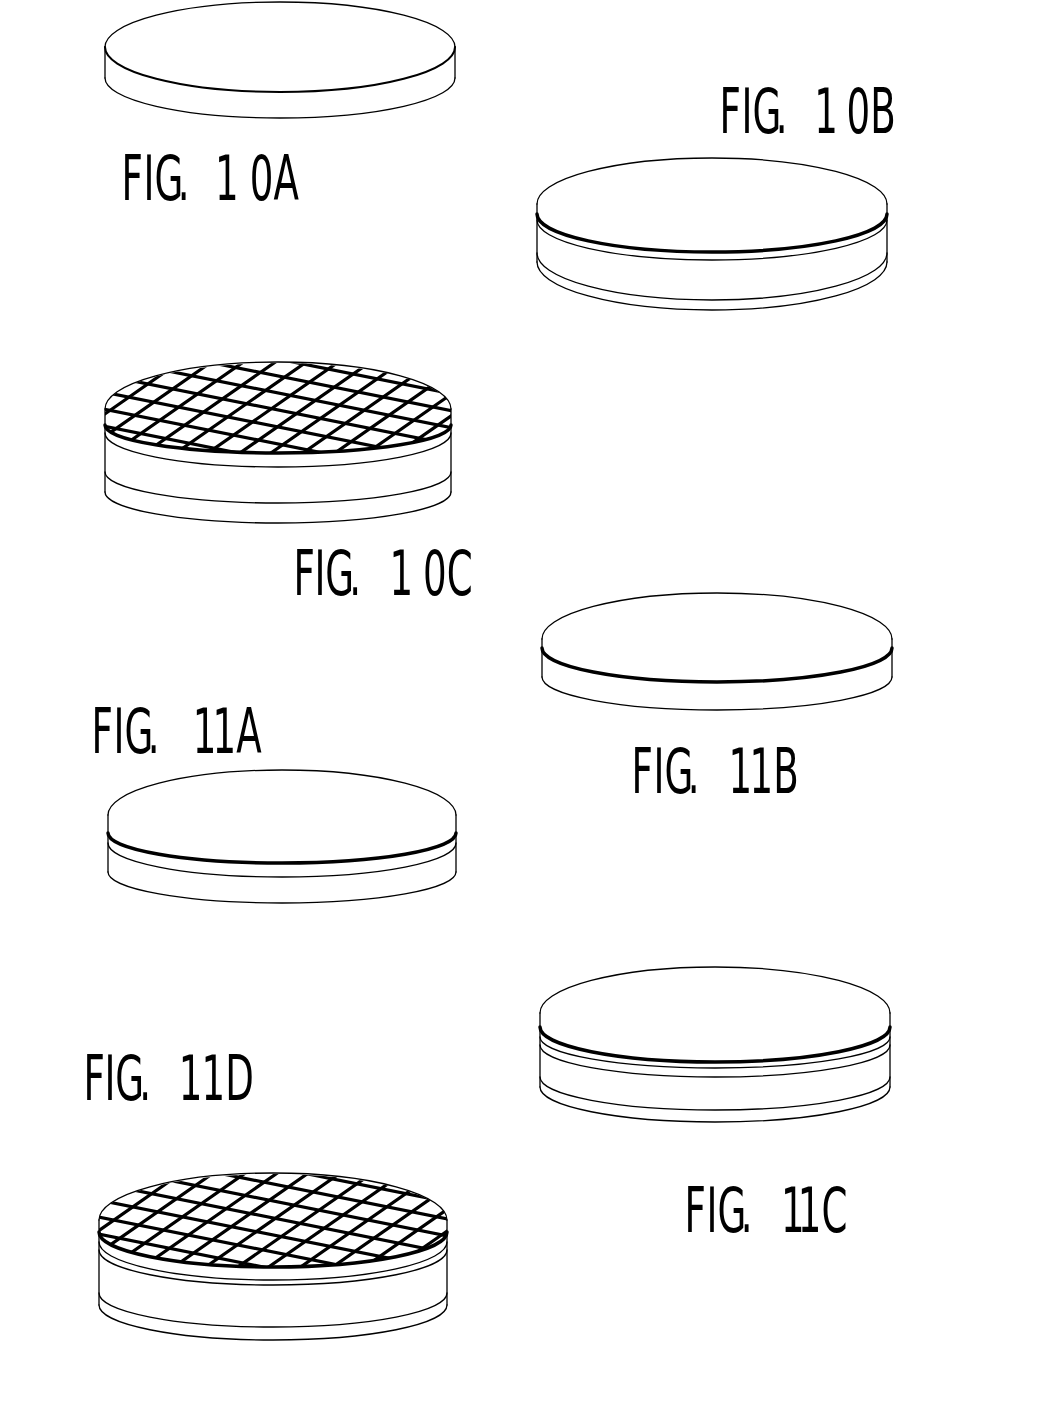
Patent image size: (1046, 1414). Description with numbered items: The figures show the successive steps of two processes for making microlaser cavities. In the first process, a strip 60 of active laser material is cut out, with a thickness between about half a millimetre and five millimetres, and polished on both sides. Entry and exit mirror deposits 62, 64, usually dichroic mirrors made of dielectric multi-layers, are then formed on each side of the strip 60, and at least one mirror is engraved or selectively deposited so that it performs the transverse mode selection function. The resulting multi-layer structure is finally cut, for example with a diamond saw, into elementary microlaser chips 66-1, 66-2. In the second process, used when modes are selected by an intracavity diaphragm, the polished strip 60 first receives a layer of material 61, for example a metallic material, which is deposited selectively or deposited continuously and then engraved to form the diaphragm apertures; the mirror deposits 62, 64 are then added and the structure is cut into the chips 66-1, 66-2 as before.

In FIG. 10A, the strip of active laser material 60 is at (135, 94).
In FIG. 10B, the strip of active laser material 60 is at (710, 288).
In FIG. 10C, the strip of active laser material 60 is at (115, 455).
In FIG. 11A, the strip of active laser material 60 is at (140, 875).
In FIG. 11B, the strip of active laser material 60 is at (833, 690).
In FIG. 11C, the strip of active laser material 60 is at (548, 1063).
In FIG. 11D, the strip of active laser material 60 is at (440, 1278).
In FIG. 11A, the layer of material 61 is at (112, 835).
In FIG. 11C, the layer of material 61 is at (548, 1038).
In FIG. 10B, the entry mirror deposit 62 is at (833, 290).
In FIG. 10C, the entry mirror deposit 62 is at (158, 505).
In FIG. 11C, the entry mirror deposit 62 is at (815, 1110).
In FIG. 11D, the entry mirror deposit 62 is at (435, 1300).
In FIG. 10B, the exit mirror deposit 64 is at (642, 168).
In FIG. 10C, the exit mirror deposit 64 is at (110, 425).
In FIG. 11C, the exit mirror deposit 64 is at (597, 988).
In FIG. 11D, the exit mirror deposit 64 is at (445, 1232).
In FIG. 10C, the microlaser chip 66-1 is at (270, 330).
In FIG. 11D, the microlaser chip 66-1 is at (212, 1212).
In FIG. 10C, the microlaser chip 66-2 is at (278, 395).
In FIG. 11D, the microlaser chip 66-2 is at (245, 1212).